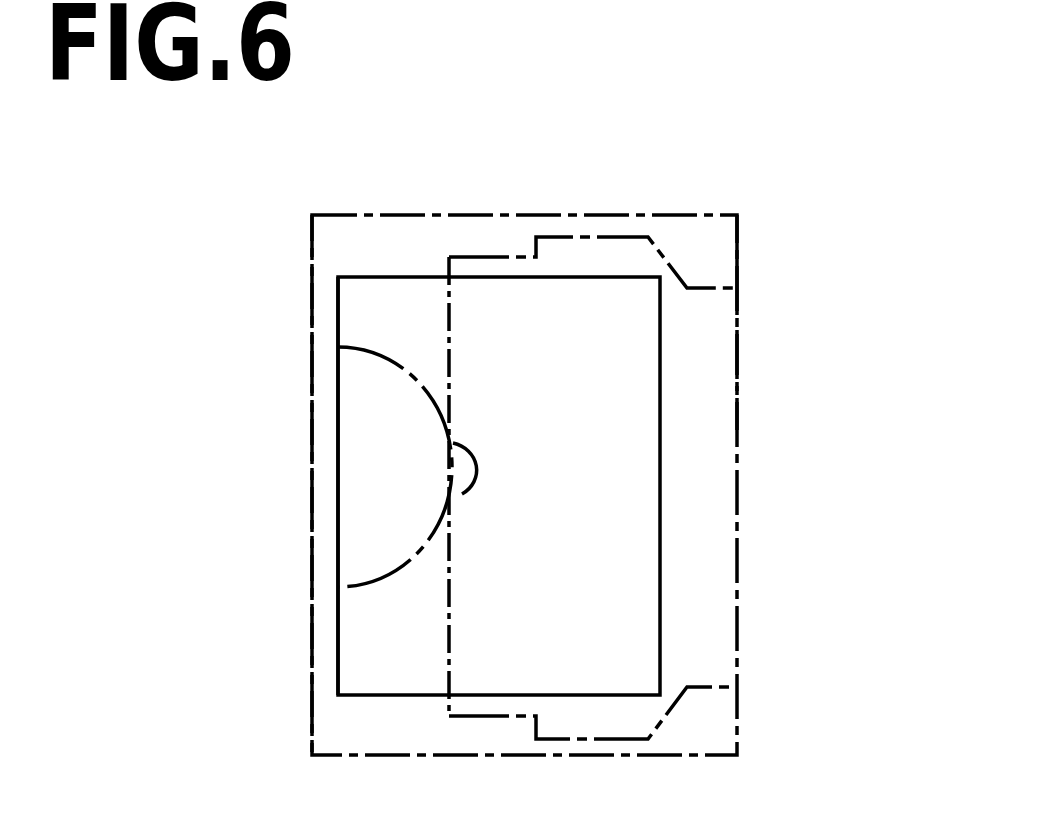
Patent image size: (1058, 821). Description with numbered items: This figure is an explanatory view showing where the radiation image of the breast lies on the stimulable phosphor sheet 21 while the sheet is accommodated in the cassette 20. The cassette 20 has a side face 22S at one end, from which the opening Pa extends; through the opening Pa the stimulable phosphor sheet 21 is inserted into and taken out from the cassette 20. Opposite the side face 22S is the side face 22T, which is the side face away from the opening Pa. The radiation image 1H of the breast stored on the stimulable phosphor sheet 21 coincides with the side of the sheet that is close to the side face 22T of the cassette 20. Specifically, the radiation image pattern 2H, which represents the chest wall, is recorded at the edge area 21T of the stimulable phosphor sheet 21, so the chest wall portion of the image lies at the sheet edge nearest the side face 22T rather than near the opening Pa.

The cassette 20 is at (665, 213).
The stimulable phosphor sheet 21 is at (400, 277).
The edge area of the stimulable phosphor sheet 21T is at (336, 487).
The side face 22S is at (740, 300).
The side face 22T is at (312, 305).
The radiation image of the breast 1H is at (410, 398).
The radiation image pattern representing the chest wall 2H is at (350, 497).
The opening Pa is at (768, 398).